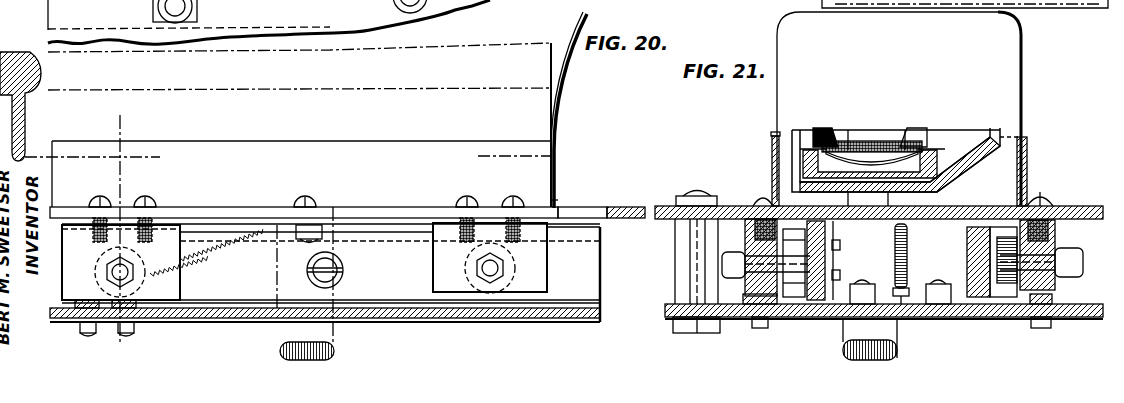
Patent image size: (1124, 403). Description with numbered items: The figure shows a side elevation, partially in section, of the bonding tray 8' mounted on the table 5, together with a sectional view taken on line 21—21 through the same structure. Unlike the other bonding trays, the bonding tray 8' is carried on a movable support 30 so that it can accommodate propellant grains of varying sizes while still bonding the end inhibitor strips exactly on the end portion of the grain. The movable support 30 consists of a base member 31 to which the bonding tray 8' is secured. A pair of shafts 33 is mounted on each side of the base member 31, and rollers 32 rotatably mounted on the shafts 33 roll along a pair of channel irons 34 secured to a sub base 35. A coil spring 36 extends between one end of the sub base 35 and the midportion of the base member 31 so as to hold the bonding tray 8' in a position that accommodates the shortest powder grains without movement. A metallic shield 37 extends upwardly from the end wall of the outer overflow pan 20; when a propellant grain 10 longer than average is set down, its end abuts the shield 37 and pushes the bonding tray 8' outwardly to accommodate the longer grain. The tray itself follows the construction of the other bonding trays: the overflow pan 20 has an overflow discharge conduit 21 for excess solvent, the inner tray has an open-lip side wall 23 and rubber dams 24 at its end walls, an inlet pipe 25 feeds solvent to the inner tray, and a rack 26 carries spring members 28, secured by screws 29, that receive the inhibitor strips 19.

In FIG. 20, the table 5 is at (618, 208).
In FIG. 21, the table 5 is at (666, 205).
In FIG. 20, the bonding tray 8' is at (585, 185).
In FIG. 20, the propellant grain 10 is at (20, 52).
In FIG. 21, the inhibitor strip 19 is at (1026, 0).
In FIG. 20, the overflow pan 20 is at (548, 169).
In FIG. 21, the overflow pan 20 is at (1028, 145).
In FIG. 20, the overflow discharge conduit 21 is at (135, 126).
In FIG. 21, the overflow discharge conduit 21 is at (898, 333).
In FIG. 21, the side wall 23 is at (982, 163).
In FIG. 21, the rubber dam 24 is at (826, 147).
In FIG. 20, the inlet pipe 25 is at (318, 352).
In FIG. 21, the inlet pipe 25 is at (885, 357).
In FIG. 21, the rack 26 is at (820, 162).
In FIG. 21, the spring member 28 is at (802, 147).
In FIG. 21, the screw 29 is at (927, 147).
In FIG. 20, the movable support 30 is at (367, 208).
In FIG. 21, the movable support 30 is at (1052, 205).
In FIG. 20, the base member 31 is at (403, 224).
In FIG. 21, the base member 31 is at (752, 219).
In FIG. 20, the roller 32 is at (100, 283).
In FIG. 21, the roller 32 is at (792, 235).
In FIG. 20, the shaft 33 is at (113, 268).
In FIG. 21, the shaft 33 is at (752, 262).
In FIG. 20, the channel iron 34 is at (583, 293).
In FIG. 21, the channel iron 34 is at (805, 297).
In FIG. 20, the sub base 35 is at (601, 313).
In FIG. 21, the sub base 35 is at (795, 315).
In FIG. 20, the coil spring 36 is at (212, 252).
In FIG. 21, the coil spring 36 is at (908, 256).
In FIG. 20, the metallic shield 37 is at (561, 88).
In FIG. 21, the metallic shield 37 is at (1033, 58).